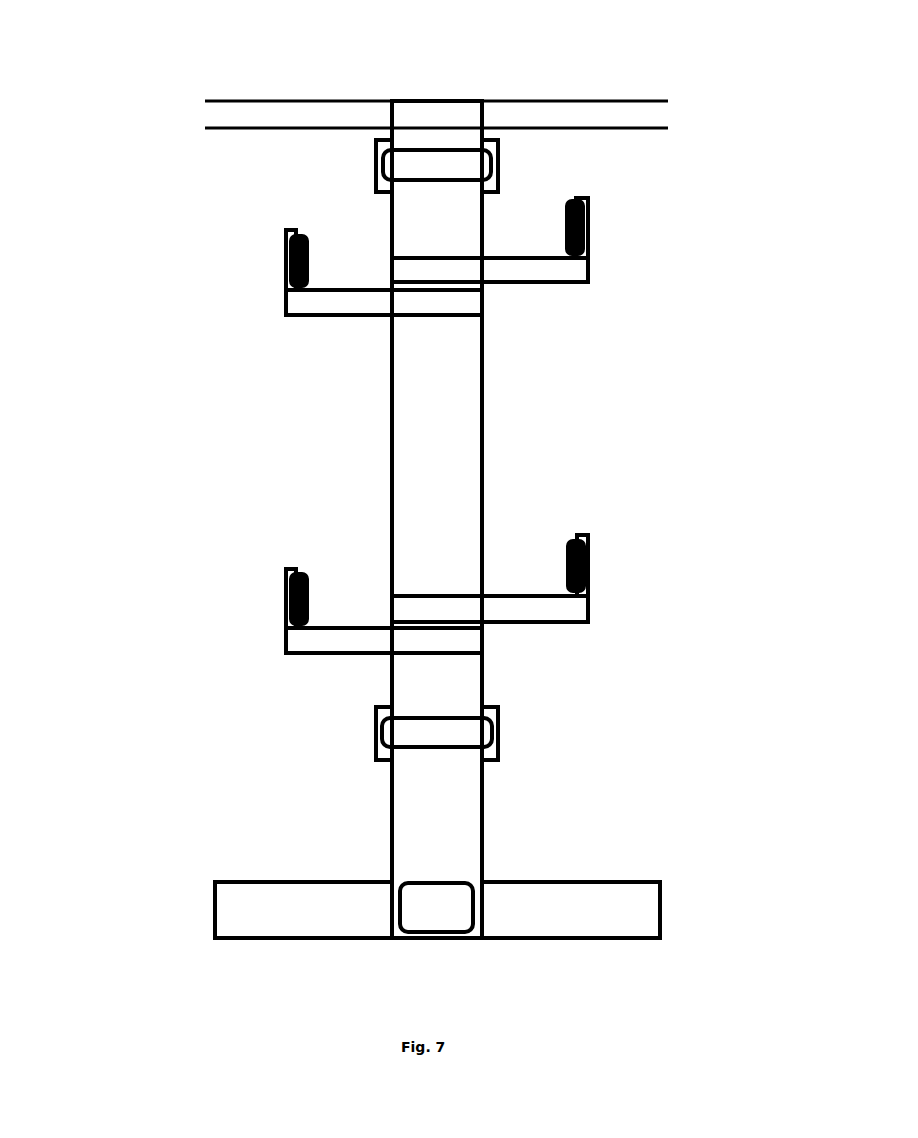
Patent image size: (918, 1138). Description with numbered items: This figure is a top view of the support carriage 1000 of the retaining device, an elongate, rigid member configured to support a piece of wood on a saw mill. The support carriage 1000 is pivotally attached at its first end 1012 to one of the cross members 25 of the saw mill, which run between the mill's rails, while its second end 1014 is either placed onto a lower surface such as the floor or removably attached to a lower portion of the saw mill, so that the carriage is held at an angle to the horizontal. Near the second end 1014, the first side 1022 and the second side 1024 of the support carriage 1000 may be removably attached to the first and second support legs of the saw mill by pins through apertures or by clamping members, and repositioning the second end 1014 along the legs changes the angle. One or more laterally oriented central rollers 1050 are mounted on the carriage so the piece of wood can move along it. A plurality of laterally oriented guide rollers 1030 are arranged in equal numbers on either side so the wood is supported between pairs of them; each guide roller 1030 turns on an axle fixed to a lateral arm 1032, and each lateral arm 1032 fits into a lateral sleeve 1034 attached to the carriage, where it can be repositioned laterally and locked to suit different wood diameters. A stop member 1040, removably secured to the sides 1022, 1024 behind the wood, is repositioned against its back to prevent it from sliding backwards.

The cross member 25 is at (290, 112).
The support carriage 1000 is at (335, 447).
The first end 1012 is at (437, 117).
The second end 1014 is at (432, 940).
The first side 1022 is at (213, 905).
The second side 1024 is at (662, 912).
The guide roller 1030 is at (285, 250).
The lateral arm 1032 is at (333, 306).
The lateral sleeve 1034 is at (428, 303).
The stop member 1040 is at (497, 902).
The central roller 1050 is at (418, 165).